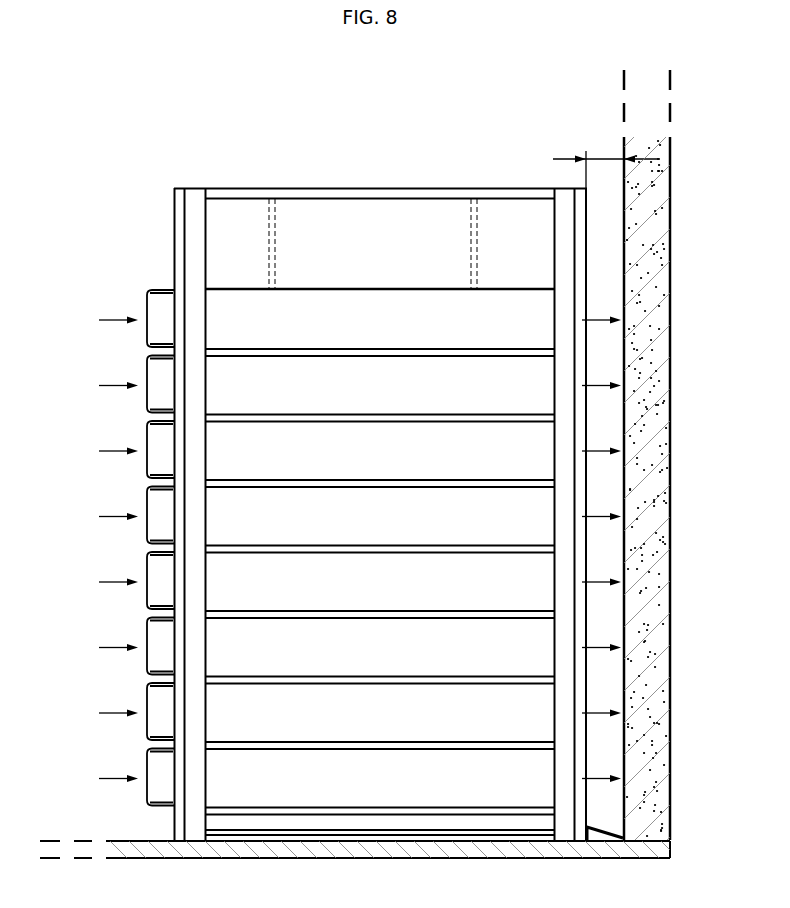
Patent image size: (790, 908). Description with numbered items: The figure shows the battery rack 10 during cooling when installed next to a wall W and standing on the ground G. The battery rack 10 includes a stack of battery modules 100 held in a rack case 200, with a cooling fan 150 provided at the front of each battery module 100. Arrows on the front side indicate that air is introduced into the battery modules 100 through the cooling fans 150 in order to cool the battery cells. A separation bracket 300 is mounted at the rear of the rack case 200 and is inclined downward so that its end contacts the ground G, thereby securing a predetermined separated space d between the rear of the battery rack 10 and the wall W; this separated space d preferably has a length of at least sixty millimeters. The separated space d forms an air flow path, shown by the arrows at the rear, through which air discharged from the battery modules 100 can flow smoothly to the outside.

The battery rack 10 is at (183, 121).
The battery module 100 is at (131, 629).
The cooling fan 150 is at (147, 563).
The rack case 200 is at (443, 187).
The separation bracket 300 is at (603, 853).
The separated space d is at (606, 163).
The wall W is at (652, 474).
The ground G is at (386, 859).